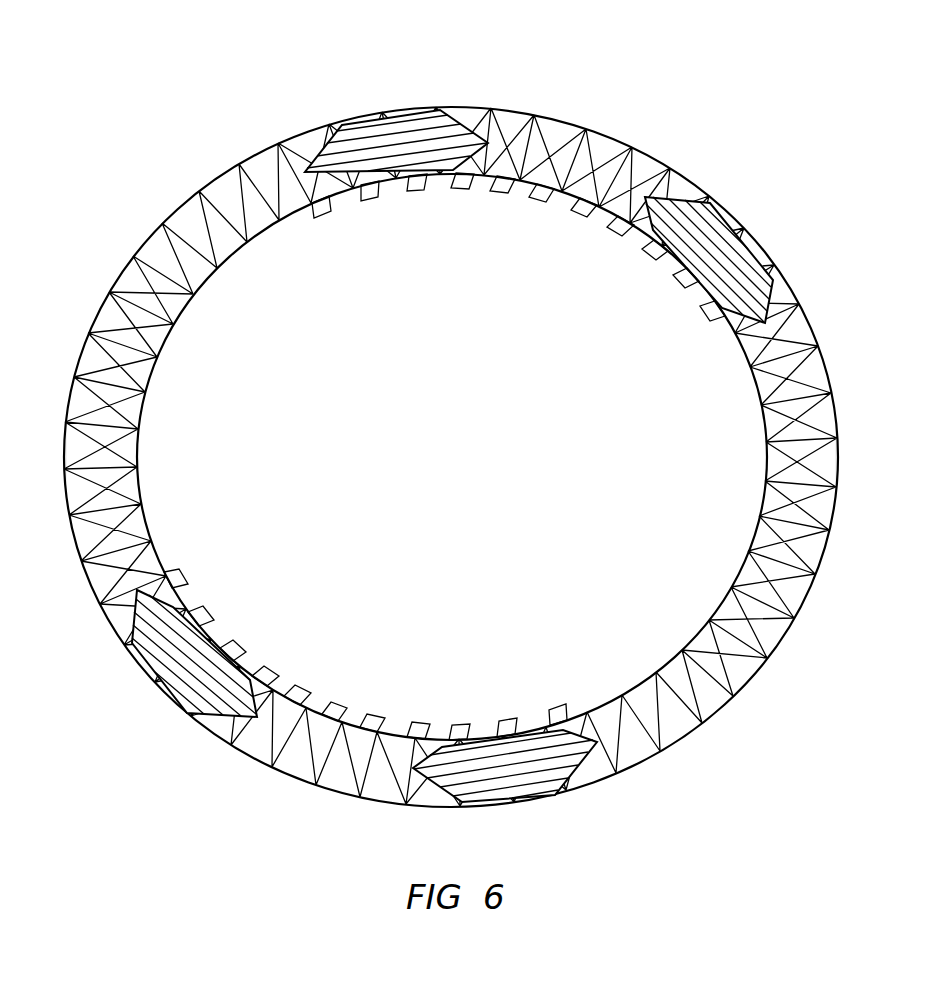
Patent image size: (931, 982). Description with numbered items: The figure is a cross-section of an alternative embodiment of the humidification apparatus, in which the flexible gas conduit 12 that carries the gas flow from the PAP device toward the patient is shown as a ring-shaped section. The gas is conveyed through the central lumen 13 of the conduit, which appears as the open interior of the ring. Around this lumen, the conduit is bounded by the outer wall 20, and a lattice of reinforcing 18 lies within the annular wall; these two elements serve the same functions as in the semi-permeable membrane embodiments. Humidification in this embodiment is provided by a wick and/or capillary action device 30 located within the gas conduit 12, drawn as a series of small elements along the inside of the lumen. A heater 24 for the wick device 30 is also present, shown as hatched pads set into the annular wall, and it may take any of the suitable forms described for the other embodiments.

The flexible gas conduit 12 is at (268, 118).
The central lumen 13 is at (452, 457).
The reinforcing 18 is at (228, 215).
The outer wall 20 is at (146, 242).
The heater 24 is at (716, 247).
The wick and/or capillary action device 30 is at (581, 218).